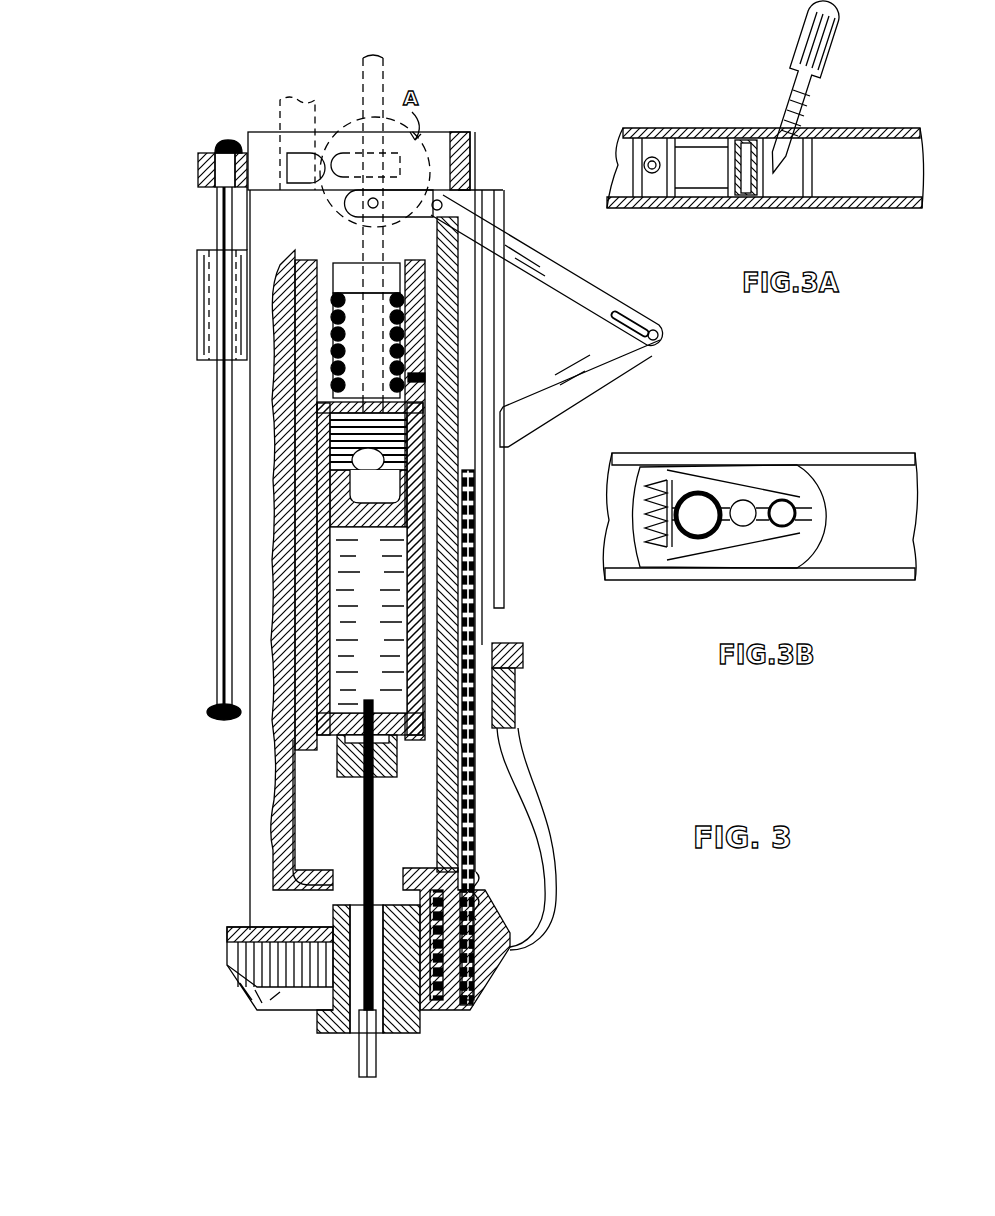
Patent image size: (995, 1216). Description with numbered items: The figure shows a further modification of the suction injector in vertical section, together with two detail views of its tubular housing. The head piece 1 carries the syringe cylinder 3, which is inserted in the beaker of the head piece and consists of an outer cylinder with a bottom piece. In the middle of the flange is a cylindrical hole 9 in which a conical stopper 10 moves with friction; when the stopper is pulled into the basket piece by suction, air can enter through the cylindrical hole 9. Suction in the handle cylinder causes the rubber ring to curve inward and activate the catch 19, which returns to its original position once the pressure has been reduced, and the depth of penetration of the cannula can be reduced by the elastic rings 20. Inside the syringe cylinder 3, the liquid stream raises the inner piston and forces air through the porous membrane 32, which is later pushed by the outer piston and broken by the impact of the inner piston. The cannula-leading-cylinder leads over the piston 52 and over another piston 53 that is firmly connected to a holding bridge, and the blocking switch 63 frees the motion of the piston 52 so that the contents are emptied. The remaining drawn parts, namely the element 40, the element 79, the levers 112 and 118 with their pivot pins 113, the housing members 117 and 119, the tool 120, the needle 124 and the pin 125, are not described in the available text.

In FIG. 3, the head piece 1 is at (400, 525).
In FIG. 3, the syringe cylinder 3 is at (410, 558).
In FIG. 3, the cylindrical hole 9 is at (222, 523).
In FIG. 3, the conical stopper 10 is at (520, 652).
In FIG. 3, the catch 19 is at (405, 490).
In FIG. 3, the elastic rings 20 is at (497, 586).
In FIG. 3, the porous membrane 32 is at (428, 378).
In FIG. 3B, the clamp member 40 is at (748, 530).
In FIG. 3, the piston 52 is at (345, 456).
In FIG. 3, the piston 53 is at (350, 398).
In FIG. 3, the blocking switch 63 is at (420, 323).
In FIG. 3, the bottom plug 79 is at (456, 1012).
In FIG. 3, the lower lever 112 is at (592, 376).
In FIG. 3, the pivot pin 113 is at (445, 204).
In FIG. 3, the link / sleeve 117 is at (407, 197).
In FIG. 3B, the link / sleeve 117 is at (813, 573).
In FIG. 3, the upper lever 118 is at (566, 278).
In FIG. 3, the guide sleeve 119 is at (222, 320).
In FIG. 3A, the screwdriver 120 is at (836, 50).
In FIG. 3, the needle 124 is at (370, 1065).
In FIG. 3A, the locking pin 125 is at (779, 175).